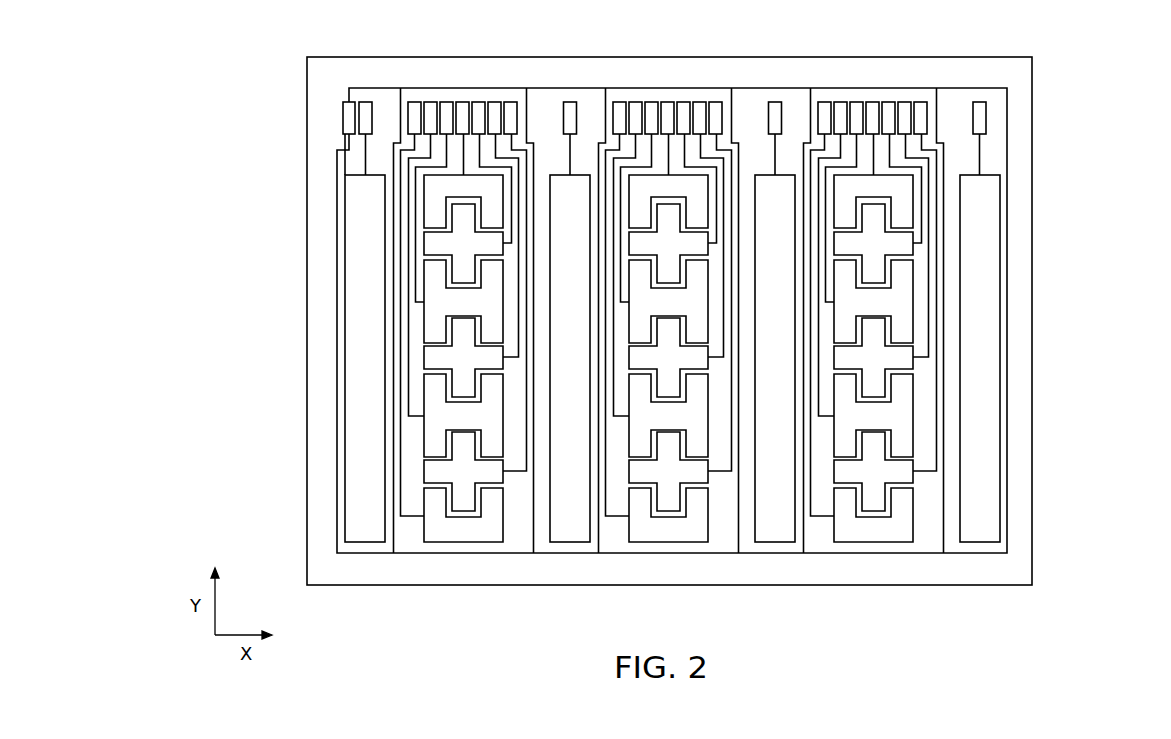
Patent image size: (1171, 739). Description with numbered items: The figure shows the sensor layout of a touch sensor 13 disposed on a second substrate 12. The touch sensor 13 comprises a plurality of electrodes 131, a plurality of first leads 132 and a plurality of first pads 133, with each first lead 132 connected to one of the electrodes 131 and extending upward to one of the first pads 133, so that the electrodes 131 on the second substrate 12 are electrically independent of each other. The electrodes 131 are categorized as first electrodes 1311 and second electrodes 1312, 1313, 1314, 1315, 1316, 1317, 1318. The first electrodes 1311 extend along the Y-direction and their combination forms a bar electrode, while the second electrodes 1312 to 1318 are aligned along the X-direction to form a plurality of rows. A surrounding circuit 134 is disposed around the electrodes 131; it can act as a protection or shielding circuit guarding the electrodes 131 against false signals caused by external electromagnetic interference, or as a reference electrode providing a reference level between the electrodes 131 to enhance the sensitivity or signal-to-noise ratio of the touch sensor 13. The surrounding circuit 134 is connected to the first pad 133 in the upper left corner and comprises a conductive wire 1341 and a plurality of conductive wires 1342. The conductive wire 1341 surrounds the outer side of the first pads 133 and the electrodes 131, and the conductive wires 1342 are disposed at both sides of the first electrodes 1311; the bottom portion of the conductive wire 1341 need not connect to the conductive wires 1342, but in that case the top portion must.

The second substrate 12 is at (306, 86).
The touch sensor 13 is at (967, 77).
The electrodes 131 is at (222, 178).
The first electrodes 1311 is at (362, 215).
The second electrode 1312 is at (433, 188).
The second electrode 1313 is at (433, 245).
The second electrode 1314 is at (440, 297).
The second electrode 1315 is at (433, 360).
The second electrode 1316 is at (438, 412).
The second electrode 1317 is at (433, 473).
The second electrode 1318 is at (433, 528).
The first leads 132 is at (367, 152).
The first pads 133 is at (346, 118).
The surrounding circuit 134 is at (598, 82).
The conductive wire 1341 is at (845, 88).
The conductive wires 1342 is at (945, 543).